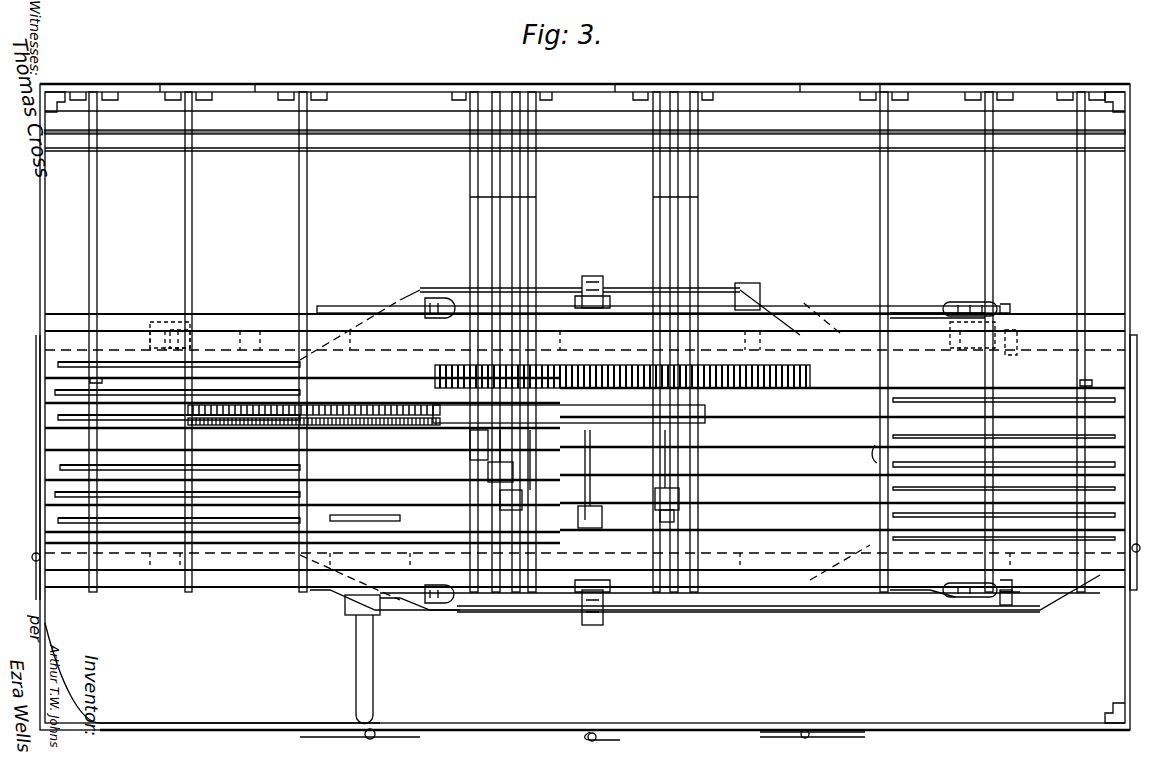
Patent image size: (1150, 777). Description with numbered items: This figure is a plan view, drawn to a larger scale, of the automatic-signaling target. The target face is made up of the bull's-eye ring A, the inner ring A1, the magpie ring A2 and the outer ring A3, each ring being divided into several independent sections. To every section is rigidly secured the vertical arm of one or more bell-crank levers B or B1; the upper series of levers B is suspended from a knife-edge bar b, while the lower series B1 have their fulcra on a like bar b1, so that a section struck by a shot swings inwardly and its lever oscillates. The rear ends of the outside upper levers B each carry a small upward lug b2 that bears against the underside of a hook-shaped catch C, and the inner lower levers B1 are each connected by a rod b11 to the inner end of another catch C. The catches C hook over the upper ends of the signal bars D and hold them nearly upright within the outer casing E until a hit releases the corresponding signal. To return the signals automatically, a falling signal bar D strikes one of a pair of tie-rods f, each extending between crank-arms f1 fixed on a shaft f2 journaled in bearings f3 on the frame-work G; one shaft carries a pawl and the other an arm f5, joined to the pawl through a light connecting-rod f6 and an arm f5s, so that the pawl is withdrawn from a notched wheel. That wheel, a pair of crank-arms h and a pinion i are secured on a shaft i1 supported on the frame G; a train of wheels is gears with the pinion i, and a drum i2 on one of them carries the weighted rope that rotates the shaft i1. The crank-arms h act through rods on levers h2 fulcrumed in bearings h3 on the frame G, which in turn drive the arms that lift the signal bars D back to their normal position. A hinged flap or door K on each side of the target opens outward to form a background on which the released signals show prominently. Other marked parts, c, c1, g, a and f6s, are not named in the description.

The bull's-eye ring A is at (439, 90).
The inner ring A1 is at (289, 90).
The magpie ring A2 is at (185, 90).
The outer ring A3 is at (92, 90).
The bell-crank lever B is at (98, 121).
The bell-crank lever B1 is at (492, 216).
The outer casing E is at (42, 247).
The knife-edge bar b is at (404, 132).
The knife-edge bar b1 is at (877, 458).
The upward extension or lug b2 is at (96, 360).
The rod b11 is at (516, 474).
The hook-shaped catch C is at (45, 398).
The flap or door K is at (78, 433).
The frame-work G is at (585, 450).
The pinion i is at (621, 394).
The shaft i1 is at (582, 475).
The drum or winding-pulley i2 is at (380, 464).
The train of wheels is is at (798, 376).
The tie-rod f is at (326, 308).
The crank-arm f1 is at (370, 308).
The shaft or bar f2 is at (472, 404).
The bearing f3 is at (1015, 312).
The arm f5 is at (975, 302).
The arm f5s is at (434, 298).
The connecting-rod f6 is at (623, 316).
The coupling f6* f6s is at (446, 605).
The crank-arm h is at (593, 278).
The lever h2 is at (562, 282).
The bearing h3 is at (747, 288).
The part c is at (362, 462).
The part c' c1 is at (535, 502).
The part g is at (730, 464).
The part a is at (277, 563).
The signal bar D is at (482, 668).